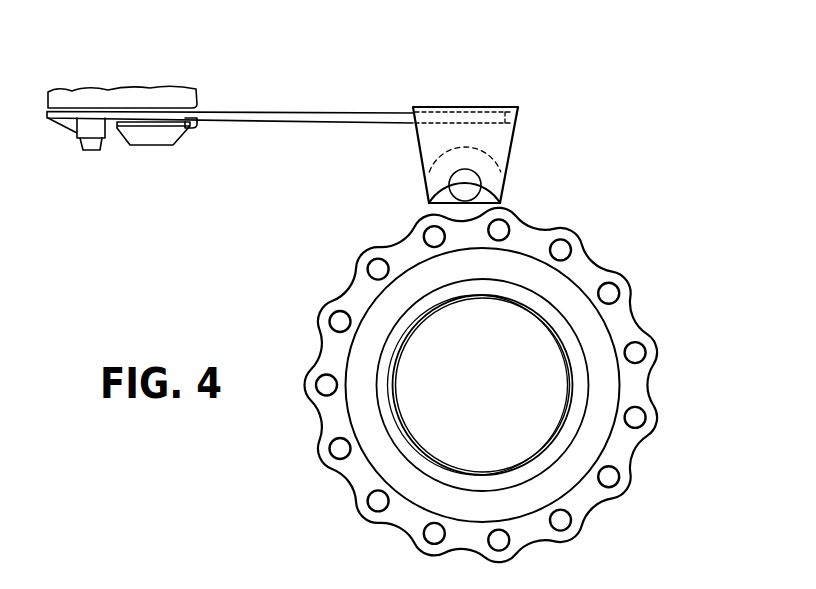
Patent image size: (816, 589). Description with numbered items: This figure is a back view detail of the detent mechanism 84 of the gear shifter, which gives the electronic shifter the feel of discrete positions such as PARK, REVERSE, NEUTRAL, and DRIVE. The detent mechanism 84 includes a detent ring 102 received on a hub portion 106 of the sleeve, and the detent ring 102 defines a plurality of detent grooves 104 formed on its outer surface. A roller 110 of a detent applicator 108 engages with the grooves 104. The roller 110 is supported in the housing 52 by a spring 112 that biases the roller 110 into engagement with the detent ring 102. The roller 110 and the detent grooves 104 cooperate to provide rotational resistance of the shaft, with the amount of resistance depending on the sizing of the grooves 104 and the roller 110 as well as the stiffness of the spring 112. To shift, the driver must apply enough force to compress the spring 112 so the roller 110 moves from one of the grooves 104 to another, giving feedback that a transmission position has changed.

The housing 52 is at (118, 90).
The detent mechanism 84 is at (643, 127).
The detent ring 102 is at (597, 278).
The detent grooves 104 is at (345, 295).
The hub portion 106 is at (372, 473).
The detent applicator 108 is at (456, 125).
The roller 110 is at (493, 155).
The spring 112 is at (304, 122).